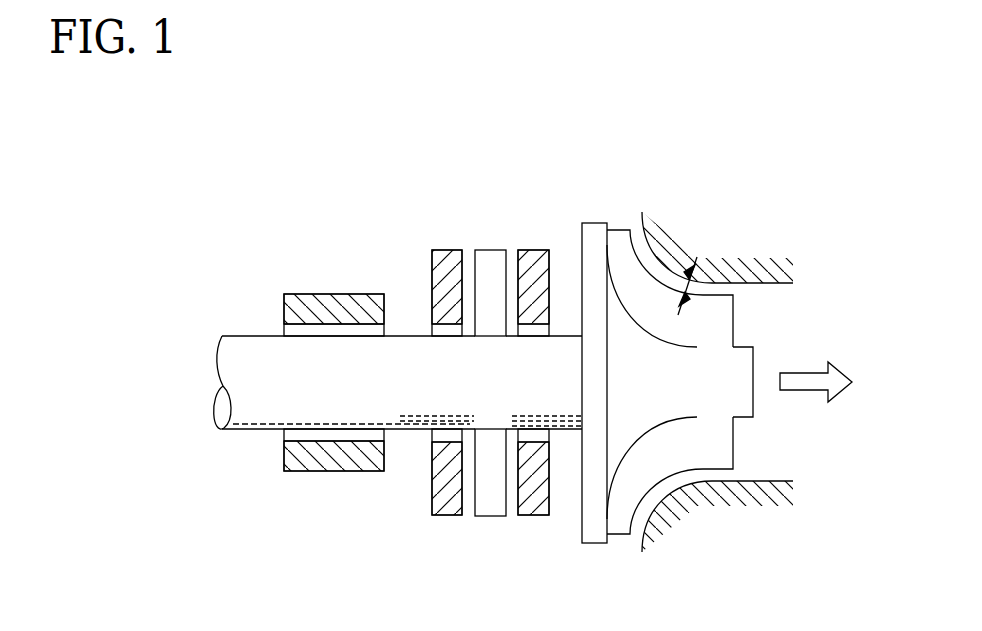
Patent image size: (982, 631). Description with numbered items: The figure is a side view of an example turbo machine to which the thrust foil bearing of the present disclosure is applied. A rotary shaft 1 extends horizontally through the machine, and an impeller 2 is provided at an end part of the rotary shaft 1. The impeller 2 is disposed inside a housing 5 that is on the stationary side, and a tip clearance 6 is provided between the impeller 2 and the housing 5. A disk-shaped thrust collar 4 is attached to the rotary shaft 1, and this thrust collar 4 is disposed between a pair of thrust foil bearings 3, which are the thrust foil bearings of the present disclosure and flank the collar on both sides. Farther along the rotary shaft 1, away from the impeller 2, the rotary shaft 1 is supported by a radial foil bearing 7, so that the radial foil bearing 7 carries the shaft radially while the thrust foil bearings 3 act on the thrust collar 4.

The rotary shaft 1 is at (247, 343).
The impeller 2 is at (634, 287).
The thrust foil bearing 3 is at (446, 263).
The thrust collar 4 is at (492, 263).
The housing 5 is at (668, 256).
The tip clearance 6 is at (710, 284).
The radial foil bearing 7 is at (335, 312).